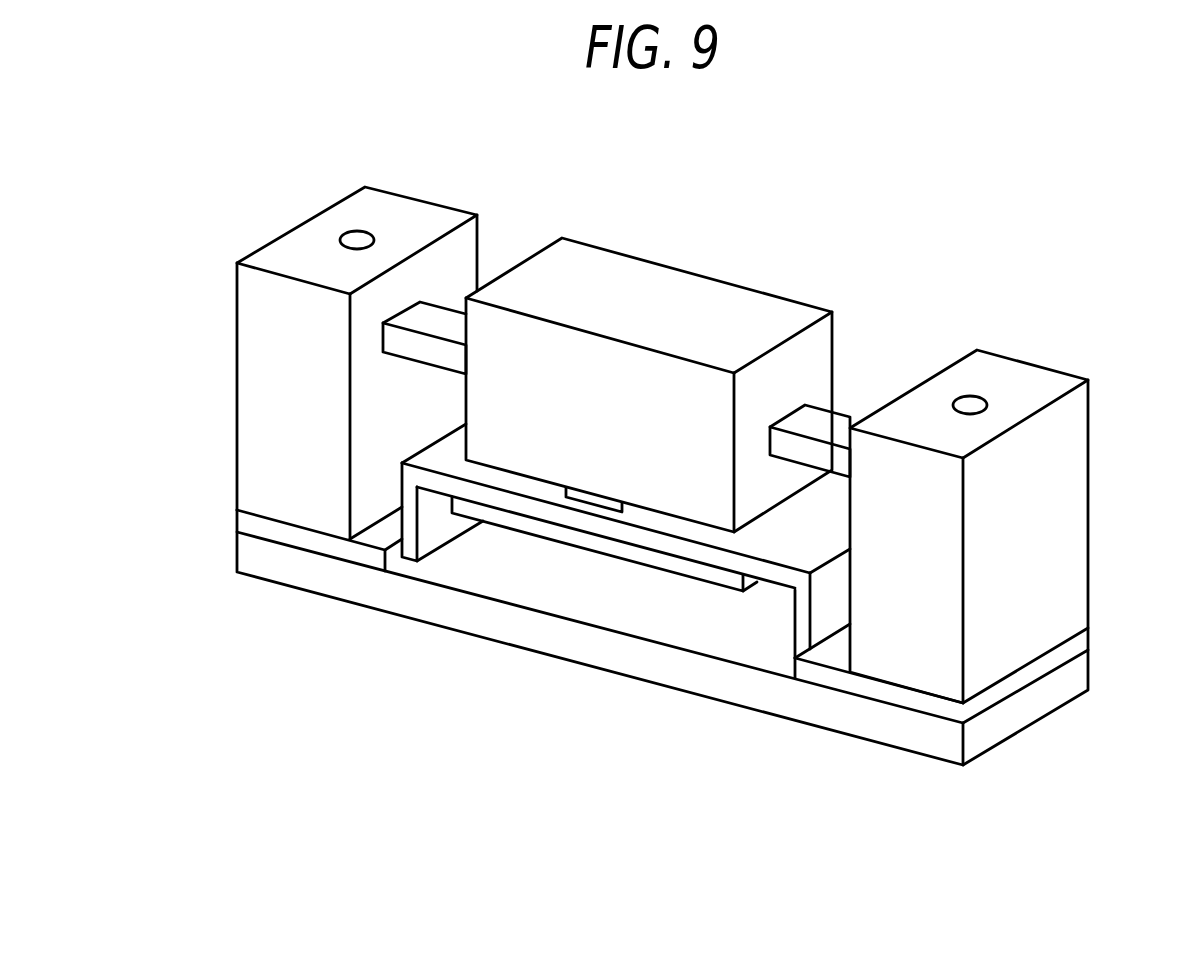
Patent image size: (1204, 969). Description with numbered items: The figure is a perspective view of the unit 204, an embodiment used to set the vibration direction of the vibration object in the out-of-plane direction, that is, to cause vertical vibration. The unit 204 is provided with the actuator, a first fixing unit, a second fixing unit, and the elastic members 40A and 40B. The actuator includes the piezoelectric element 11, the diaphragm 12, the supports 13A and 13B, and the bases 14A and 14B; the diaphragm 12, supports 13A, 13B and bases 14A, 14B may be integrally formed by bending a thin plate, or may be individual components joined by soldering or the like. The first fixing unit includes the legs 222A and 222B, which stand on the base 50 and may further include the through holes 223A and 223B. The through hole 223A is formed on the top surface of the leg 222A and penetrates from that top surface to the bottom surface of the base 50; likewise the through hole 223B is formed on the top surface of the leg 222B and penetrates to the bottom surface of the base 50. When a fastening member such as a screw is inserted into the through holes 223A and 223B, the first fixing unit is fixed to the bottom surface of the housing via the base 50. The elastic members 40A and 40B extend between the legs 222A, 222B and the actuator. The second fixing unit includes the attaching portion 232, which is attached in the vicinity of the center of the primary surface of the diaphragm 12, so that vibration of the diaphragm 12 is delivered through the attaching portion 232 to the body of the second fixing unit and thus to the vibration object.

The unit 204 is at (882, 219).
The leg 222A is at (283, 405).
The leg 222B is at (1037, 553).
The through hole 223A is at (357, 238).
The through hole 223B is at (970, 405).
The elastic member 40A is at (397, 339).
The elastic member 40B is at (840, 458).
The piezoelectric element 11 is at (515, 523).
The diaphragm 12 is at (693, 550).
The support 13A is at (412, 527).
The support 13B is at (798, 623).
The base 14A is at (312, 543).
The base 14B is at (877, 692).
The attaching portion 232 is at (595, 501).
The base 50 is at (250, 553).